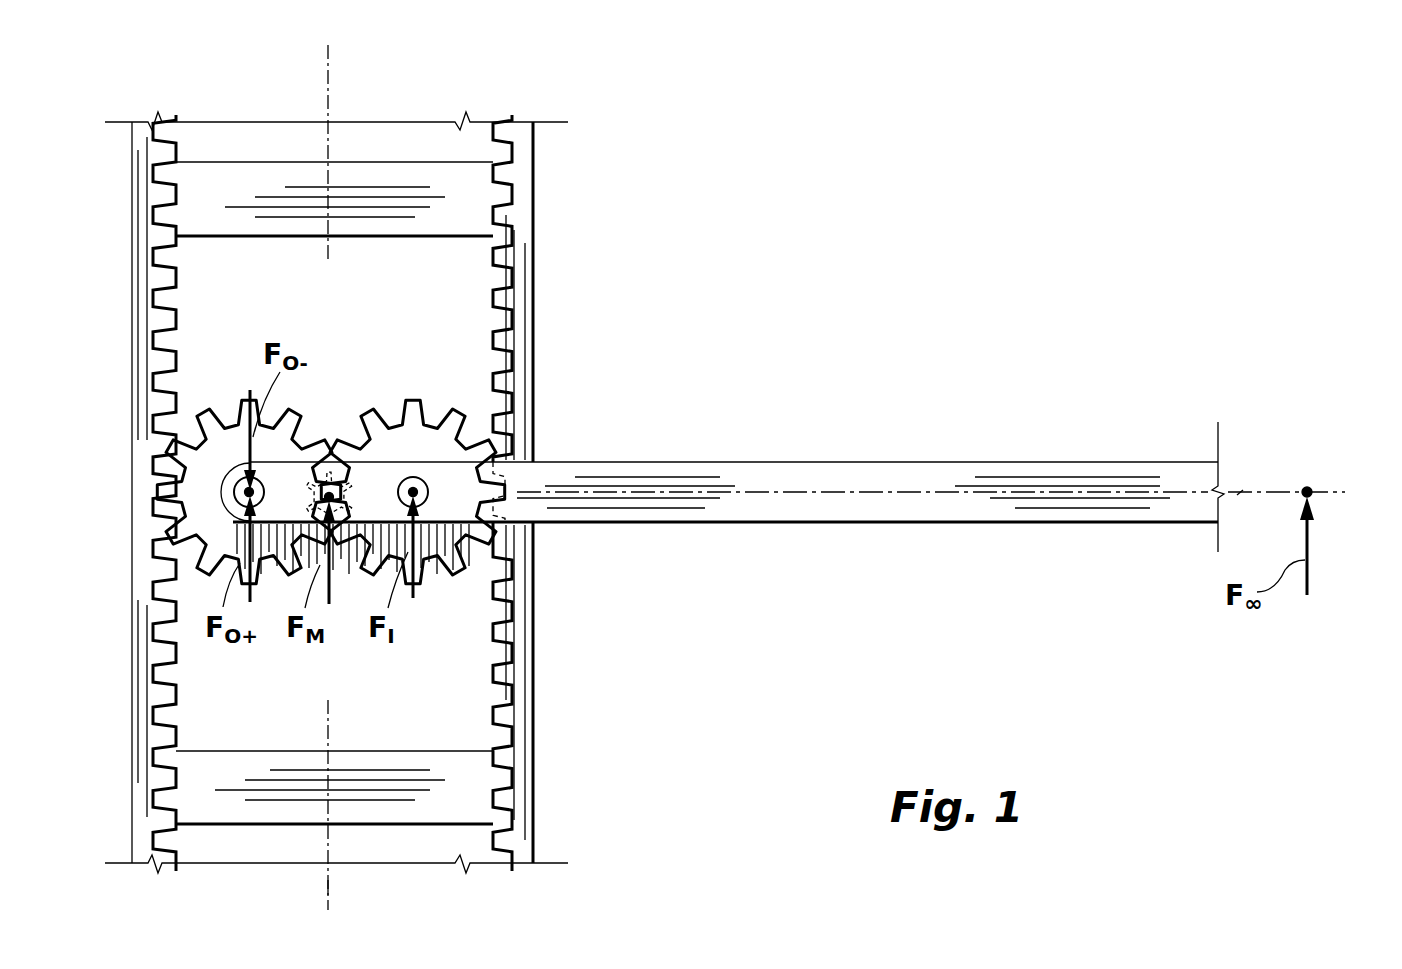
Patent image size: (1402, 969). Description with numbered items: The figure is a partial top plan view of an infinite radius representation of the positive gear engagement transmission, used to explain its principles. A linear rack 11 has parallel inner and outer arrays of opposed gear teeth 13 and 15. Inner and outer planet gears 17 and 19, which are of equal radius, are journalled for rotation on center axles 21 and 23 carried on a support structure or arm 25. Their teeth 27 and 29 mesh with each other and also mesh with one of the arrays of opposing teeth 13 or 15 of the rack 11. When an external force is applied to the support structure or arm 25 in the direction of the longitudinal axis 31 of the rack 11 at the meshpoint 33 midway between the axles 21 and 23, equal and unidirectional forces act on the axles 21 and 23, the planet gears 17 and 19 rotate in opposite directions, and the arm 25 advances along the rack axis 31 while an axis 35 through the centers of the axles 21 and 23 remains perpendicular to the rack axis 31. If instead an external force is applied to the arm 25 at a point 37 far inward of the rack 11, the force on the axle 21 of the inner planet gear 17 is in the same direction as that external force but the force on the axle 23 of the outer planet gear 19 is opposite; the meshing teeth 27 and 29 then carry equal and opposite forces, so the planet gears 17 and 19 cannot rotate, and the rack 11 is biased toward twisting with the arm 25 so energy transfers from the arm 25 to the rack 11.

The linear rack 11 is at (460, 207).
The inner array of gear teeth 13 is at (492, 668).
The outer array of gear teeth 15 is at (170, 582).
The inner planet gear 17 is at (407, 440).
The outer planet gear 19 is at (222, 445).
The center axle 21 is at (427, 486).
The center axle 23 is at (234, 488).
The support structure or arm 25 is at (930, 462).
The teeth of inner planet gear 27 is at (450, 568).
The teeth of outer planet gear 29 is at (170, 491).
The longitudinal axis of the rack 31 is at (330, 883).
The mesh point 33 is at (332, 468).
The axis through the planet gear axles 35 is at (1243, 490).
The point of force application 37 is at (1310, 485).